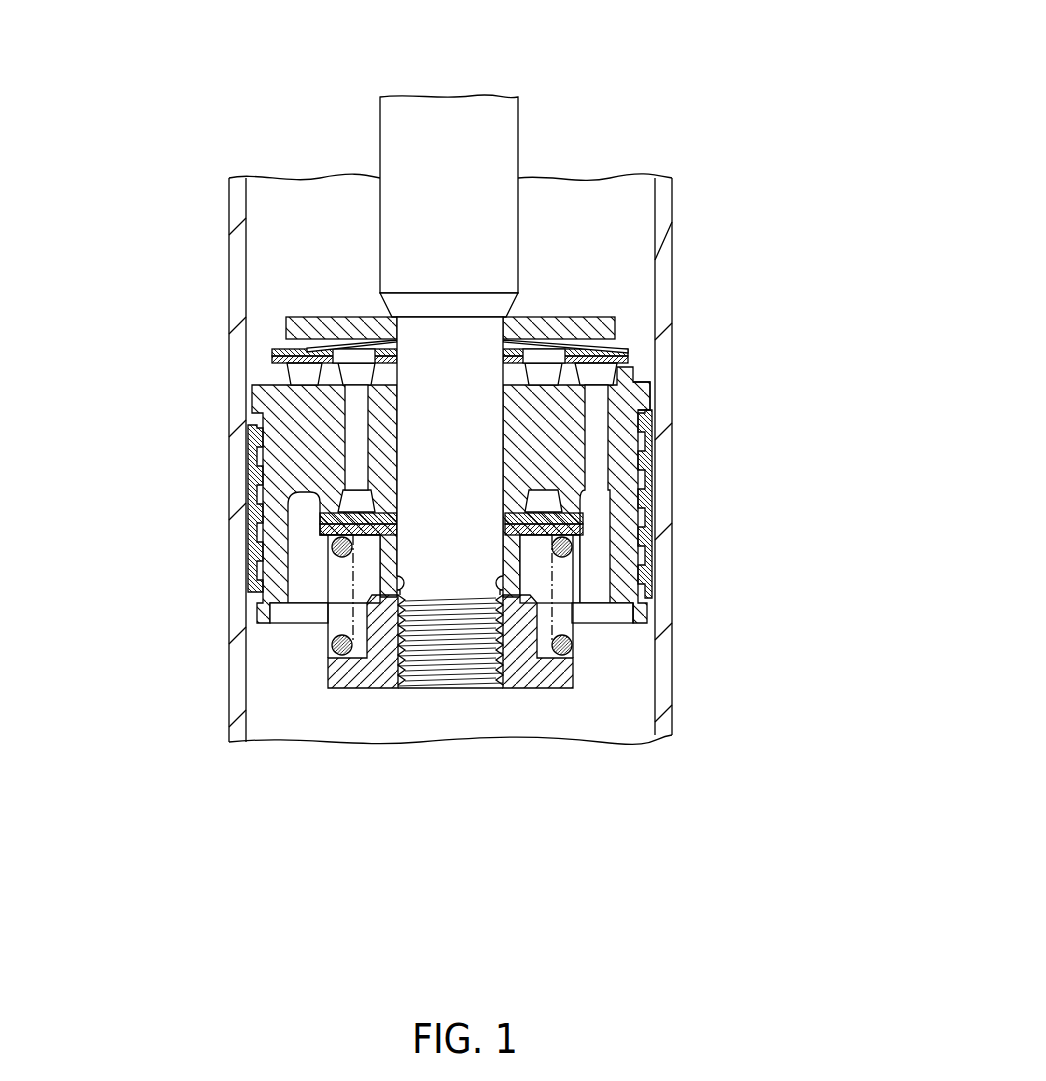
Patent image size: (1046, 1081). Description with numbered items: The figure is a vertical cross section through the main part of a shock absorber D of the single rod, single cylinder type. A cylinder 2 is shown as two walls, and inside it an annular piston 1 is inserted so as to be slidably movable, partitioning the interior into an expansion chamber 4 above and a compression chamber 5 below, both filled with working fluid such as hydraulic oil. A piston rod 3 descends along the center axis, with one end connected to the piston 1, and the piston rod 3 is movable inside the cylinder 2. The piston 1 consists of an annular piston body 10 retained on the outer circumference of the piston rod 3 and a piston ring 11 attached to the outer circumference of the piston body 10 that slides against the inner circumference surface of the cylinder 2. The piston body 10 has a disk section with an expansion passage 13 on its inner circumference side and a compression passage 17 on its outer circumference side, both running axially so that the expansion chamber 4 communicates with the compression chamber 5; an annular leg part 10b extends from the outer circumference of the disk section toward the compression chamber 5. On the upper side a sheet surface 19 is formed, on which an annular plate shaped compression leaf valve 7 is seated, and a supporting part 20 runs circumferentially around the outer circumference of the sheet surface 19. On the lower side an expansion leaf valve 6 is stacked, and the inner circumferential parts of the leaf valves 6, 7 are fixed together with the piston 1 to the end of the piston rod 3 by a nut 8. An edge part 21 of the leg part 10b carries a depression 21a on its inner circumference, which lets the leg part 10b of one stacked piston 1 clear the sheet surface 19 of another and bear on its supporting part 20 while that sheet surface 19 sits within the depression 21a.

The shock absorber D is at (449, 431).
The piston 1 is at (249, 609).
The cylinder 2 is at (667, 257).
The piston rod 3 is at (393, 117).
The expansion chamber 4 is at (282, 208).
The compression chamber 5 is at (453, 712).
The expansion leaf valve 6 is at (310, 522).
The compression leaf valve 7 is at (628, 362).
The nut 8 is at (345, 690).
The piston body 10 is at (245, 395).
The leg part 10b is at (627, 548).
The piston ring 11 is at (248, 478).
The expansion passage 13 is at (362, 457).
The compression passage 17 is at (597, 447).
The sheet surface 19 is at (270, 342).
The supporting part 20 is at (647, 380).
The edge part 21 is at (666, 611).
The depression 21a is at (633, 607).